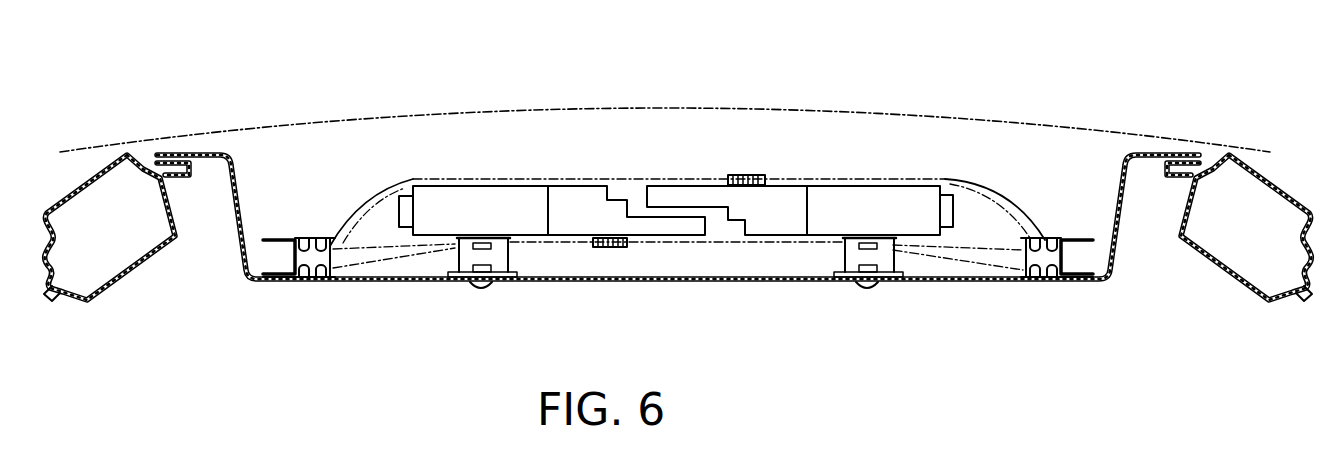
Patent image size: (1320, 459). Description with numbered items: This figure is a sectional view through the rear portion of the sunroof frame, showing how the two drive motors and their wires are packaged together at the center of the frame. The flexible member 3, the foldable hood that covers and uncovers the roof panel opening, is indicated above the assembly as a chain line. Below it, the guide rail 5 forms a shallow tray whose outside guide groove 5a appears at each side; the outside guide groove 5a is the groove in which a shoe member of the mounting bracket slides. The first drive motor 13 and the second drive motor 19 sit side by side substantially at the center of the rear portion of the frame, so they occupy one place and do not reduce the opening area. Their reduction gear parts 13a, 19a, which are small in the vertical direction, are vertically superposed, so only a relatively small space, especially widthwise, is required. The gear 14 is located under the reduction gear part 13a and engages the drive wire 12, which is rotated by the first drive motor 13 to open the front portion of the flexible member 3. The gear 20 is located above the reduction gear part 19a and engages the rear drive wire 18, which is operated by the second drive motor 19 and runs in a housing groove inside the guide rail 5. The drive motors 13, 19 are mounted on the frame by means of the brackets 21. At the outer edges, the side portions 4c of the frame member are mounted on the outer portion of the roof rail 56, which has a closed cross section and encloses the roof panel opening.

The flexible member 3 is at (599, 108).
The side portions of the frame member 4c is at (209, 152).
The guide rail 5 is at (280, 283).
The outside guide groove 5a is at (277, 256).
The drive wire 12 is at (357, 247).
The first drive motor 13 is at (490, 197).
The reduction gear part 13a is at (670, 230).
The gear 14 is at (613, 250).
The rear drive wire 18 is at (315, 222).
The second drive motor 19 is at (897, 198).
The reduction gear part 19a is at (682, 193).
The gear 20 is at (752, 175).
The bracket 21 is at (510, 253).
The roof rail 56 is at (87, 303).